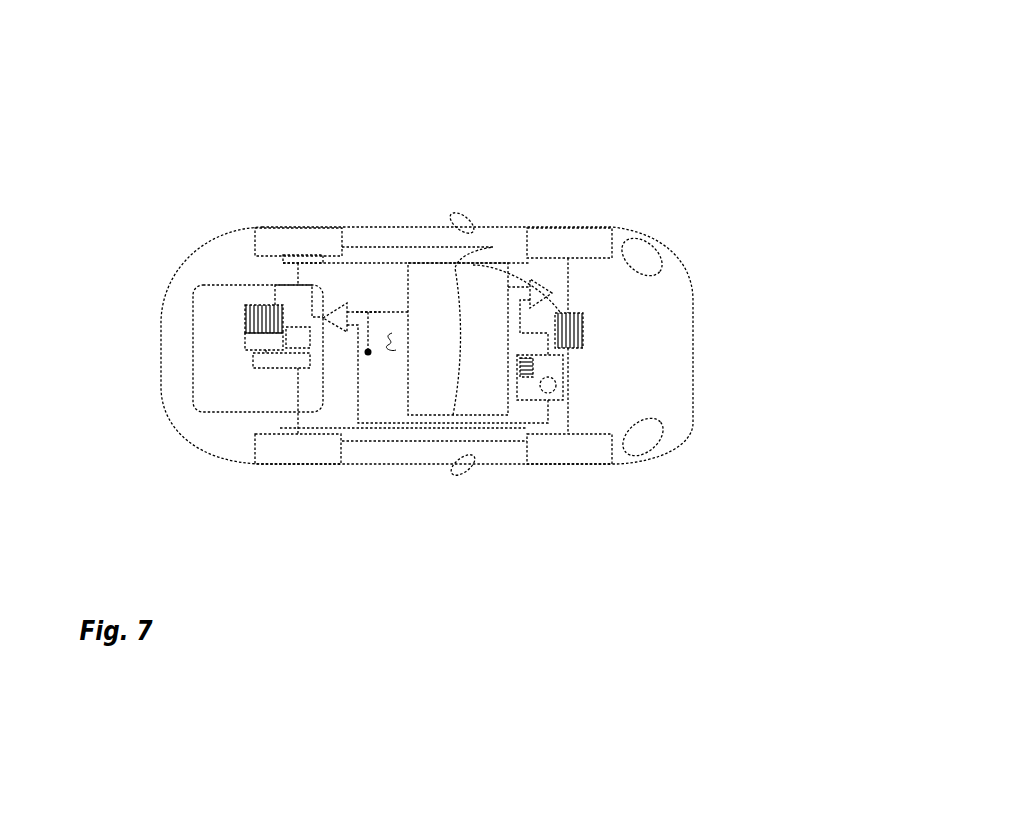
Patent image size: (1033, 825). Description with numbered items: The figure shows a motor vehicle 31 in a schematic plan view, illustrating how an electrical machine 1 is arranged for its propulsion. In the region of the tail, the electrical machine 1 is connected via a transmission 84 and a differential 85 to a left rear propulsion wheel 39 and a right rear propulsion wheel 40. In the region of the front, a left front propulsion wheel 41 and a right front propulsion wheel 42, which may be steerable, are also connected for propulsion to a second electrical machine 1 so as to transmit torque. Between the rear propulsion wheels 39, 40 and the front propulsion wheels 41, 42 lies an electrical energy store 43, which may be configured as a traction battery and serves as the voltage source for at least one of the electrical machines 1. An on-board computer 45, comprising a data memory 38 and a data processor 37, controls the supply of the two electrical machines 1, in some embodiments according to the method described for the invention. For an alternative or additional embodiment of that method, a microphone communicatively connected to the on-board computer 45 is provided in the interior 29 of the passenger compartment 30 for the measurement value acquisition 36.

The motor vehicle 31 is at (726, 78).
The left rear propulsion wheel 39 is at (300, 238).
The right rear propulsion wheel 40 is at (263, 453).
The left front propulsion wheel 41 is at (590, 238).
The right front propulsion wheel 42 is at (542, 455).
The electrical energy store 43 is at (424, 408).
The electrical machine 1 is at (247, 323).
The interior 29 is at (368, 310).
The passenger compartment 30 is at (368, 310).
The measurement value acquisition 36 is at (390, 333).
The processor 37 is at (567, 392).
The memory 38 is at (567, 367).
The on-board computer 45 is at (752, 328).
The transmission 84 is at (250, 362).
The differential 85 is at (250, 333).